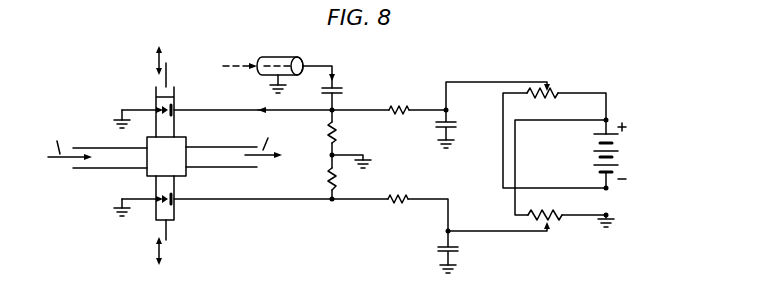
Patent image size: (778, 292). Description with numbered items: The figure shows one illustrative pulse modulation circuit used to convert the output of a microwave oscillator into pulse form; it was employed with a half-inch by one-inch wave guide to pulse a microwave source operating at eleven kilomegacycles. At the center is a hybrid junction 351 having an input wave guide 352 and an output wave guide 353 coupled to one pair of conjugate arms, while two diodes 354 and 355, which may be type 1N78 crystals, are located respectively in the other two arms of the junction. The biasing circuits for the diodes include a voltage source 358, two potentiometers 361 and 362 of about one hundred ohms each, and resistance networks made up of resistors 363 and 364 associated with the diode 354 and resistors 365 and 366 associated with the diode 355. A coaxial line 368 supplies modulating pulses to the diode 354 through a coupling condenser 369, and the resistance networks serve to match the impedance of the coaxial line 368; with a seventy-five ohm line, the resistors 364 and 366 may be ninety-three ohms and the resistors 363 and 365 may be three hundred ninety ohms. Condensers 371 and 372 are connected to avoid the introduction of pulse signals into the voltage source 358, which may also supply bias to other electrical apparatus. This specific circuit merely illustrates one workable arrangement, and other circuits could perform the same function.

The hybrid junction 351 is at (174, 148).
The input wave guide 352 is at (104, 163).
The output wave guide 353 is at (220, 157).
The diode 354 is at (178, 108).
The diode 355 is at (178, 205).
The voltage source 358 is at (618, 158).
The potentiometer 361 is at (553, 88).
The potentiometer 362 is at (553, 220).
The resistor 363 is at (398, 105).
The resistor 364 is at (340, 133).
The resistor 365 is at (404, 193).
The resistor 366 is at (340, 181).
The coaxial line 368 is at (279, 57).
The coupling condenser 369 is at (340, 91).
The condenser 371 is at (458, 124).
The condenser 372 is at (461, 251).